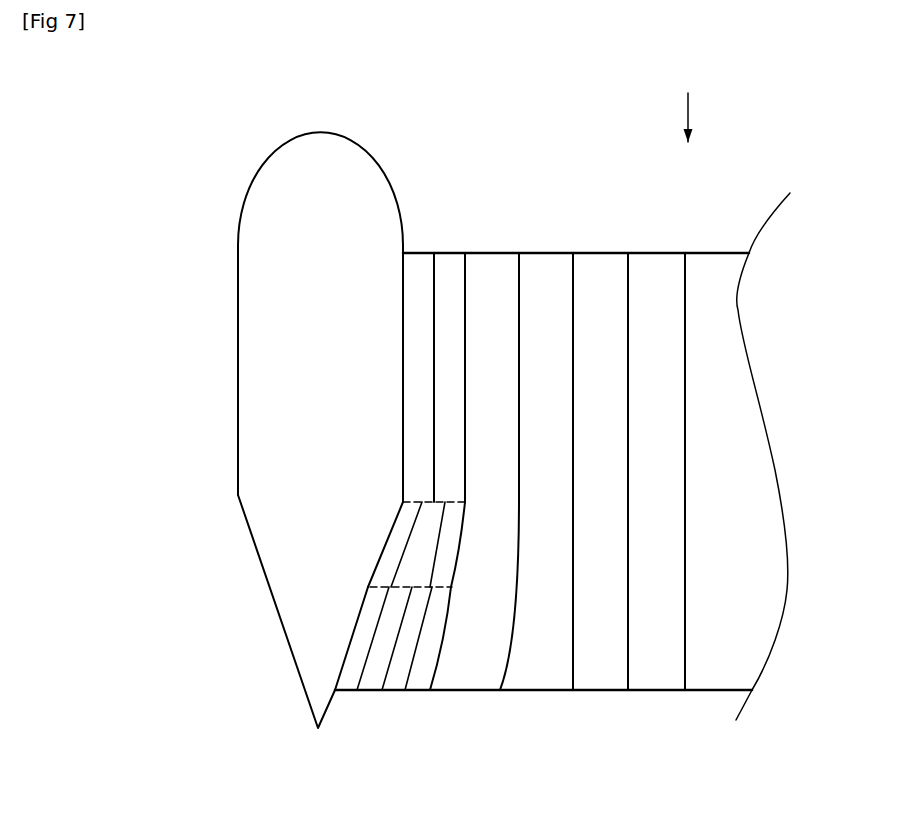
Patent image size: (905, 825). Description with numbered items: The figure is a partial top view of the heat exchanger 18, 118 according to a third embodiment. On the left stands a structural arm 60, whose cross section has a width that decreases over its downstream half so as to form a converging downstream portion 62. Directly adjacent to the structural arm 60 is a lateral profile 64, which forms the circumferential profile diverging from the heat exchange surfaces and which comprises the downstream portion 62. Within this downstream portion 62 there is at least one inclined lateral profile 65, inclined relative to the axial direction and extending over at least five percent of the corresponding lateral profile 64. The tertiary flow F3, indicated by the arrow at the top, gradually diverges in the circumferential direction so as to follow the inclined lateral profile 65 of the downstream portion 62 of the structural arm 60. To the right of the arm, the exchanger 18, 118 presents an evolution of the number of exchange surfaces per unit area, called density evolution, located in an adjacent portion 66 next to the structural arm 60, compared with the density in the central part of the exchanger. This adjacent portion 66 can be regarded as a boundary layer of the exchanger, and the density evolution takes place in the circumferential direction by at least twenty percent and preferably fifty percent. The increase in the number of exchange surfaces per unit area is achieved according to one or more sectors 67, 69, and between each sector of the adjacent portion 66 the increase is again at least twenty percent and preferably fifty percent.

The exchanger 18 is at (478, 396).
The exchanger 118 is at (478, 396).
The structural arm 60 is at (336, 446).
The converging downstream portion 62 is at (278, 662).
The lateral profile 64 is at (403, 312).
The inclined lateral profile 65 is at (657, 222).
The adjacent portion 66 is at (436, 228).
The sector 67 is at (373, 553).
The sector 69 is at (352, 625).
The tertiary flow F3 is at (702, 117).